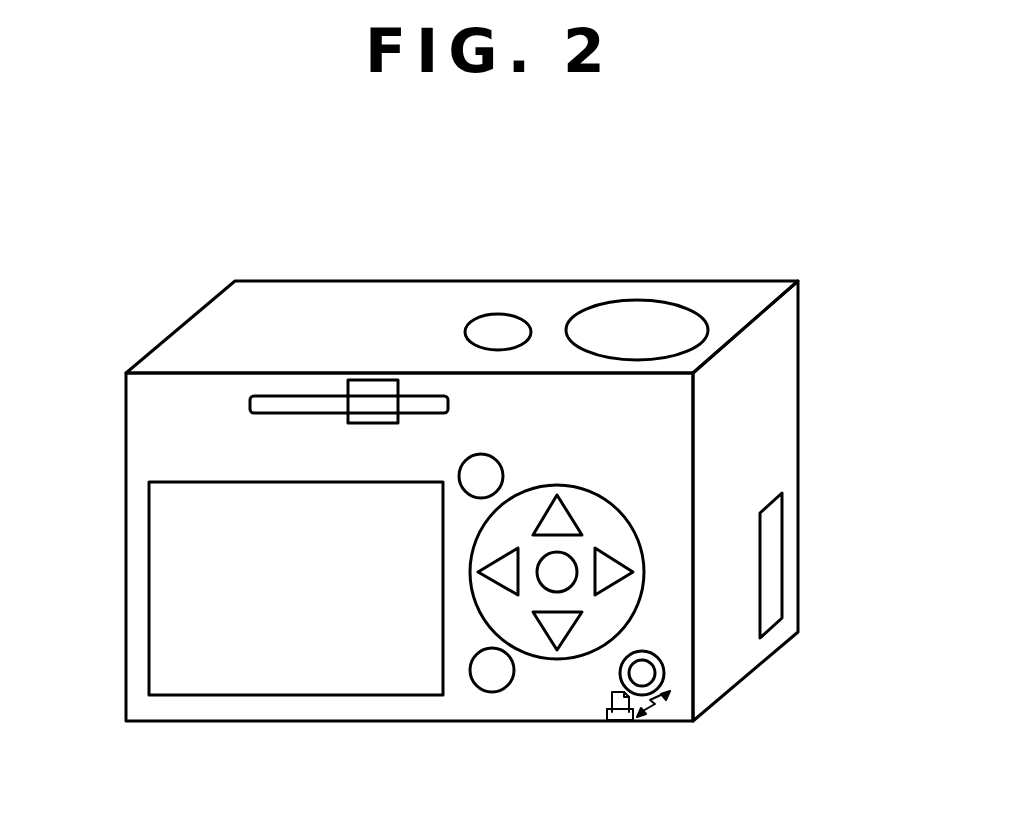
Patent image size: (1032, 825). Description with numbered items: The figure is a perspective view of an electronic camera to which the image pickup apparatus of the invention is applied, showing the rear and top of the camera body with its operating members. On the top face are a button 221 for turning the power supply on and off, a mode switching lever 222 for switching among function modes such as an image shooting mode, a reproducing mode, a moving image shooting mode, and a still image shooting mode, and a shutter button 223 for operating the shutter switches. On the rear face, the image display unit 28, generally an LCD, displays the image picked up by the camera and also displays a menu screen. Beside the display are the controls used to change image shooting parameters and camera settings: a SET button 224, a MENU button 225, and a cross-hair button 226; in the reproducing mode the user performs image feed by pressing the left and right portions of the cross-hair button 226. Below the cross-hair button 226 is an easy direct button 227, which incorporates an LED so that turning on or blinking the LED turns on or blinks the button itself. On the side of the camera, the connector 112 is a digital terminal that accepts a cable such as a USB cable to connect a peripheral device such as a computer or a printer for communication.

The image display unit 28 is at (148, 578).
The connector 112 is at (772, 566).
The button for turning on/off the power supply 221 is at (498, 314).
The mode switching lever 222 is at (420, 397).
The shutter button 223 is at (640, 300).
The SET button 224 is at (513, 678).
The MENU button 225 is at (497, 472).
The cross-hair button 226 is at (608, 530).
The easy direct button 227 is at (665, 675).